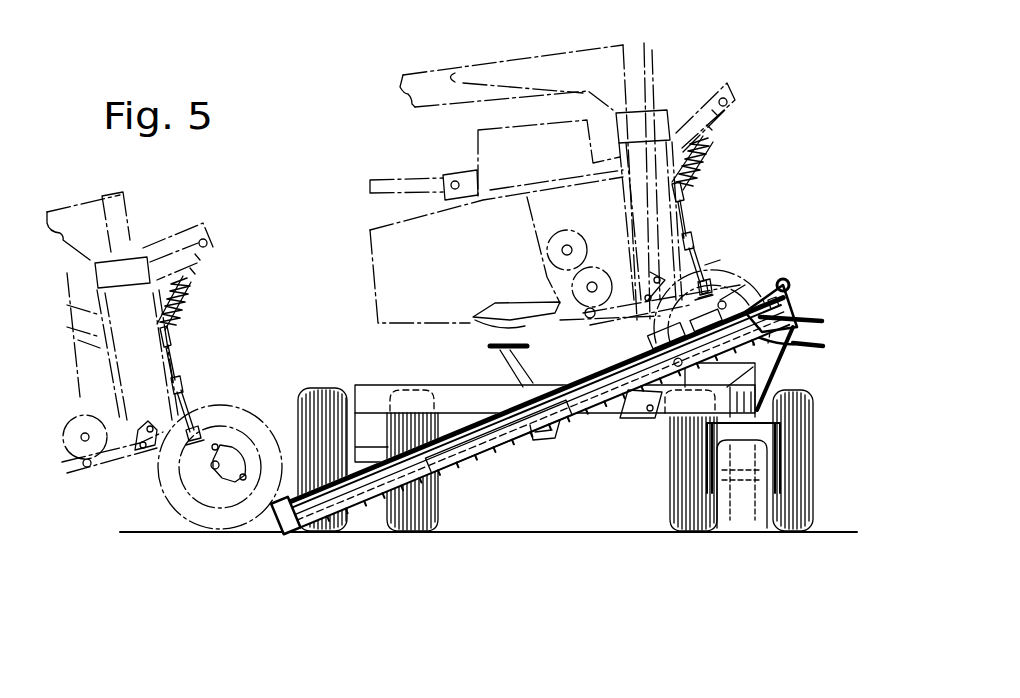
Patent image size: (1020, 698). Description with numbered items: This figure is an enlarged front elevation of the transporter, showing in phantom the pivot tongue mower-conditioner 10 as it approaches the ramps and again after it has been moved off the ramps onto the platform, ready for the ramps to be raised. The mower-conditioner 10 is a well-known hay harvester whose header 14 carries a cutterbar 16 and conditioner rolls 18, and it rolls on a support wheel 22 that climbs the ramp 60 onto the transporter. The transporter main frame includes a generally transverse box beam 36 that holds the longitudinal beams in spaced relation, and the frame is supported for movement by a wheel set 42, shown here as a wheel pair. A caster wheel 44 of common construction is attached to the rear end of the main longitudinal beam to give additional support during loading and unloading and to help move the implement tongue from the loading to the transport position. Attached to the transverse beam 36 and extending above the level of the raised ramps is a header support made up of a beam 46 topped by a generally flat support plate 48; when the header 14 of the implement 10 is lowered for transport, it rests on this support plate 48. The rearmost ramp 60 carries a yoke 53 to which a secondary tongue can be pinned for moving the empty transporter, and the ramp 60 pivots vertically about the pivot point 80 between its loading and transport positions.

The pivot tongue mower-conditioner 10 is at (753, 123).
The header 14 is at (375, 240).
The cutterbar 16 is at (520, 316).
The conditioner rolls 18 is at (575, 254).
The support wheel 22 is at (237, 400).
The transverse box beam 36 is at (472, 400).
The wheel set 42 is at (798, 470).
The caster wheel 44 is at (326, 396).
The beam 46 is at (532, 378).
The support plate 48 is at (525, 346).
The yoke 53 is at (546, 432).
The ramp 60 is at (352, 500).
The pivot point 80 is at (660, 425).